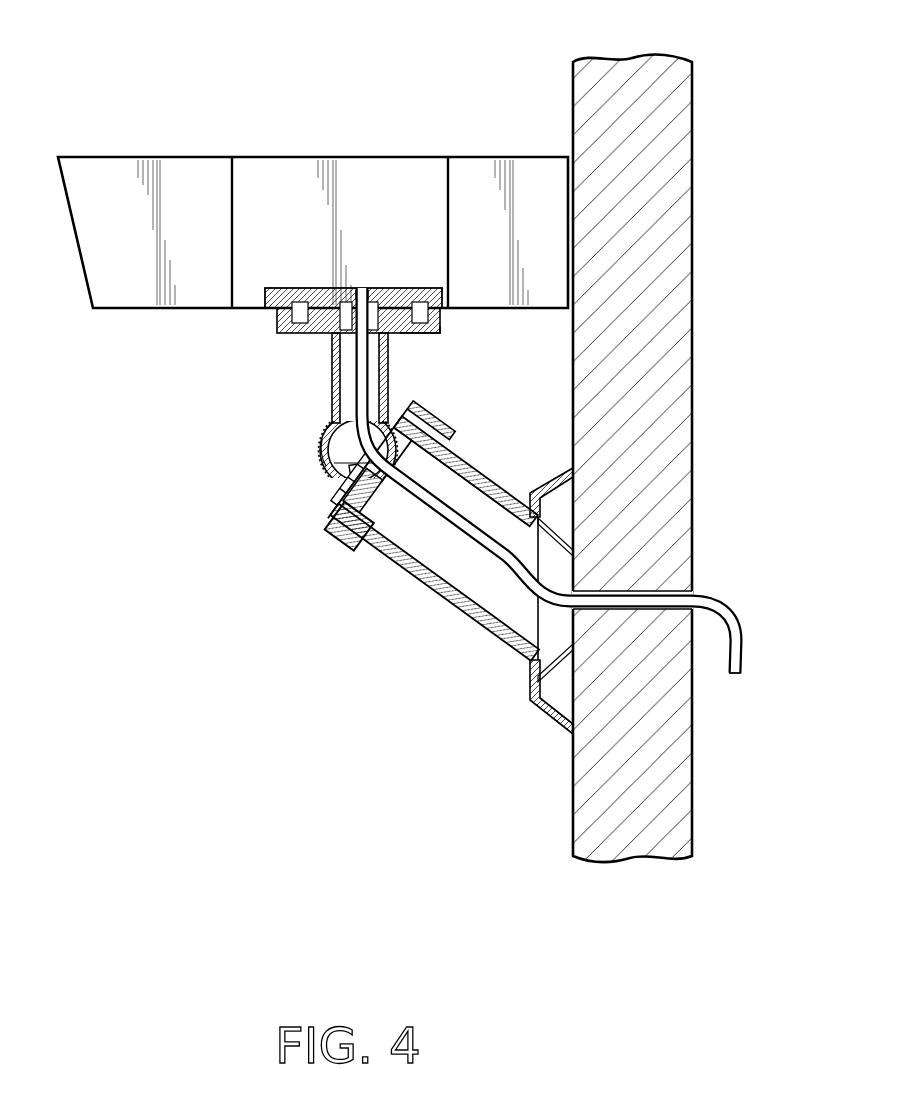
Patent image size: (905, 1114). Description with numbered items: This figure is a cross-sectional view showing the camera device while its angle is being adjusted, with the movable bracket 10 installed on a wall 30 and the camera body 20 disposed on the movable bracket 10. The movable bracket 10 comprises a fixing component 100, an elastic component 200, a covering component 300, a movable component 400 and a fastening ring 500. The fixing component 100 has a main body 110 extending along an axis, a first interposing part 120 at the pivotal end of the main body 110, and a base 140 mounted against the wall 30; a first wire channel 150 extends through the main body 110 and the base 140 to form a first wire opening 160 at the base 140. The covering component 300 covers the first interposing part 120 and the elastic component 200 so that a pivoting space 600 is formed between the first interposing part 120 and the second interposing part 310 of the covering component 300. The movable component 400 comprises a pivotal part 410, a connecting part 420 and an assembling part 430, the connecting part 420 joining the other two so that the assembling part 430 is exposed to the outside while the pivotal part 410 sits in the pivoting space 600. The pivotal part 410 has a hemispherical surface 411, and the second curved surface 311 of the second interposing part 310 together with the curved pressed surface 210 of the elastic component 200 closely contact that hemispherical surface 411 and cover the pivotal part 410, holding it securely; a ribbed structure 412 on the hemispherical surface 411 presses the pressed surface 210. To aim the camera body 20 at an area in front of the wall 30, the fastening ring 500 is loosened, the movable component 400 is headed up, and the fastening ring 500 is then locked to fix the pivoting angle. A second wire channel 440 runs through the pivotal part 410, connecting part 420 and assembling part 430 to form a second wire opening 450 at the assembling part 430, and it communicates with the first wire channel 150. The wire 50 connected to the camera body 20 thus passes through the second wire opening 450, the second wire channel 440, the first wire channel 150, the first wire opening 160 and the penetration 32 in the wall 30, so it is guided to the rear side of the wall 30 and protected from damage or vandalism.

The movable bracket 10 is at (462, 648).
The camera body 20 is at (95, 120).
The wall 30 is at (657, 230).
The penetration 32 is at (622, 590).
The wire 50 is at (565, 438).
The fixing component 100 is at (448, 522).
The main body 110 is at (452, 603).
The first interposing part 120 is at (386, 506).
The base 140 is at (557, 723).
The first wire channel 150 is at (456, 493).
The first wire opening 160 is at (577, 557).
The elastic component 200 is at (325, 502).
The pressed surface 210 is at (371, 372).
The covering component 300 is at (353, 477).
The second interposing part 310 is at (317, 460).
The second curved surface 311 is at (340, 463).
The movable component 400 is at (377, 328).
The pivotal part 410 is at (300, 427).
The hemispherical surface 411 is at (315, 422).
The ribbed structure 412 is at (322, 440).
The connecting part 420 is at (332, 370).
The assembling part 430 is at (286, 333).
The second wire channel 440 is at (398, 343).
The second wire opening 450 is at (373, 290).
The fastening ring 500 is at (343, 548).
The pivoting space 600 is at (320, 483).